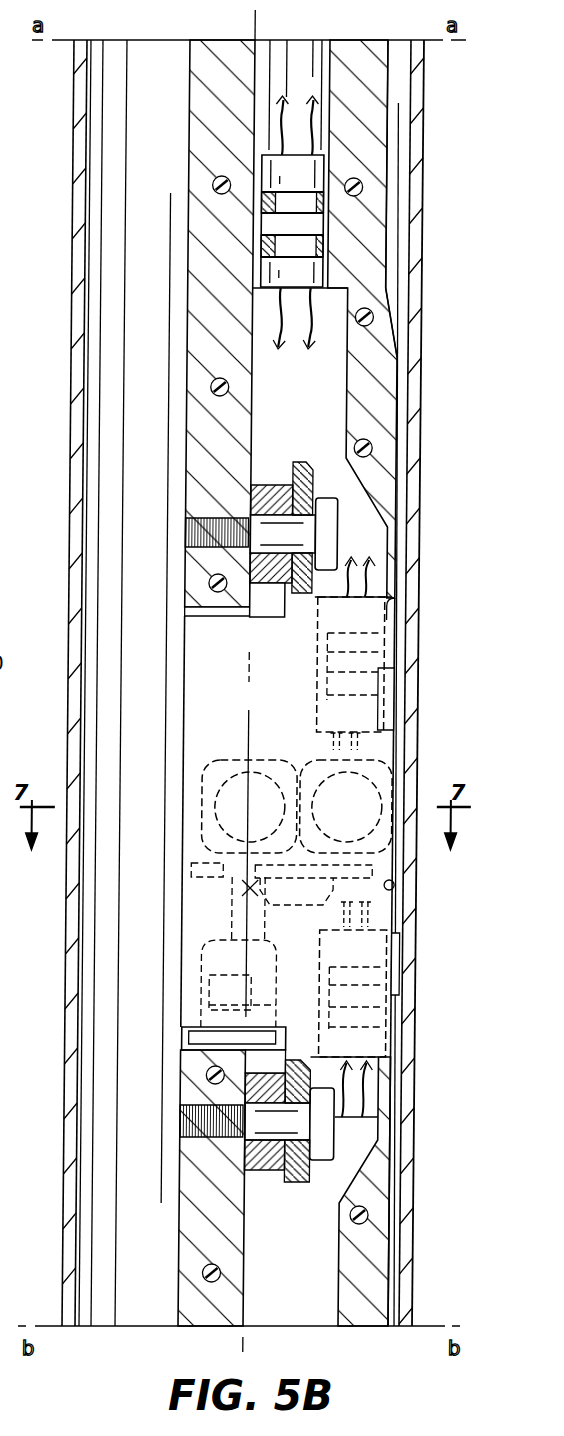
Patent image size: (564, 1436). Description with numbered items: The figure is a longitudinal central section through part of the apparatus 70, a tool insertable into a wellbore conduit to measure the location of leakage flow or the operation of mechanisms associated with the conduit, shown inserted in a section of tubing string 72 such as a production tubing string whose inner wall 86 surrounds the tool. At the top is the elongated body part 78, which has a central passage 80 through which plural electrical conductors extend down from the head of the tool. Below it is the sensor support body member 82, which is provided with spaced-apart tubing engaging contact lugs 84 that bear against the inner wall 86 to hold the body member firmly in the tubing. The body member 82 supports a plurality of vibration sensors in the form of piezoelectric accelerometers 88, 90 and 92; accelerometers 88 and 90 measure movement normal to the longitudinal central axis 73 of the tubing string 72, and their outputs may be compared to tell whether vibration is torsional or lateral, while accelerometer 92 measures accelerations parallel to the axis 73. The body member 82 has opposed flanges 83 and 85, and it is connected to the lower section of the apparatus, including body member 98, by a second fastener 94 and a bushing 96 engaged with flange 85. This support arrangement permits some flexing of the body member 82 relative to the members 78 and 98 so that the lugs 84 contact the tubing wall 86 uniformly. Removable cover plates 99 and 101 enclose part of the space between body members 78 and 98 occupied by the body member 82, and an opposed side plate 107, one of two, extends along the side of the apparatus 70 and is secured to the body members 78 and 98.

The apparatus 70 is at (152, 191).
The tubing string 72 is at (74, 346).
The longitudinal central axis 73 is at (256, 722).
The elongated body part 78 is at (191, 66).
The central passage 80 is at (288, 62).
The sensor support body member 82 is at (195, 654).
The flange 83 is at (302, 462).
The tubing engaging contact lugs 84 is at (405, 966).
The flange 85 is at (290, 1196).
The inner wall 86 is at (266, 617).
The piezoelectric accelerometer 88 is at (238, 770).
The piezoelectric accelerometer 90 is at (390, 773).
The piezoelectric accelerometer 92 is at (195, 1036).
The second fastener 94 is at (328, 523).
The bushing 96 is at (276, 1180).
The body member 98 is at (186, 1250).
The removable cover plate 99 is at (383, 392).
The removable cover plate 101 is at (378, 1258).
The side plate 107 is at (190, 722).